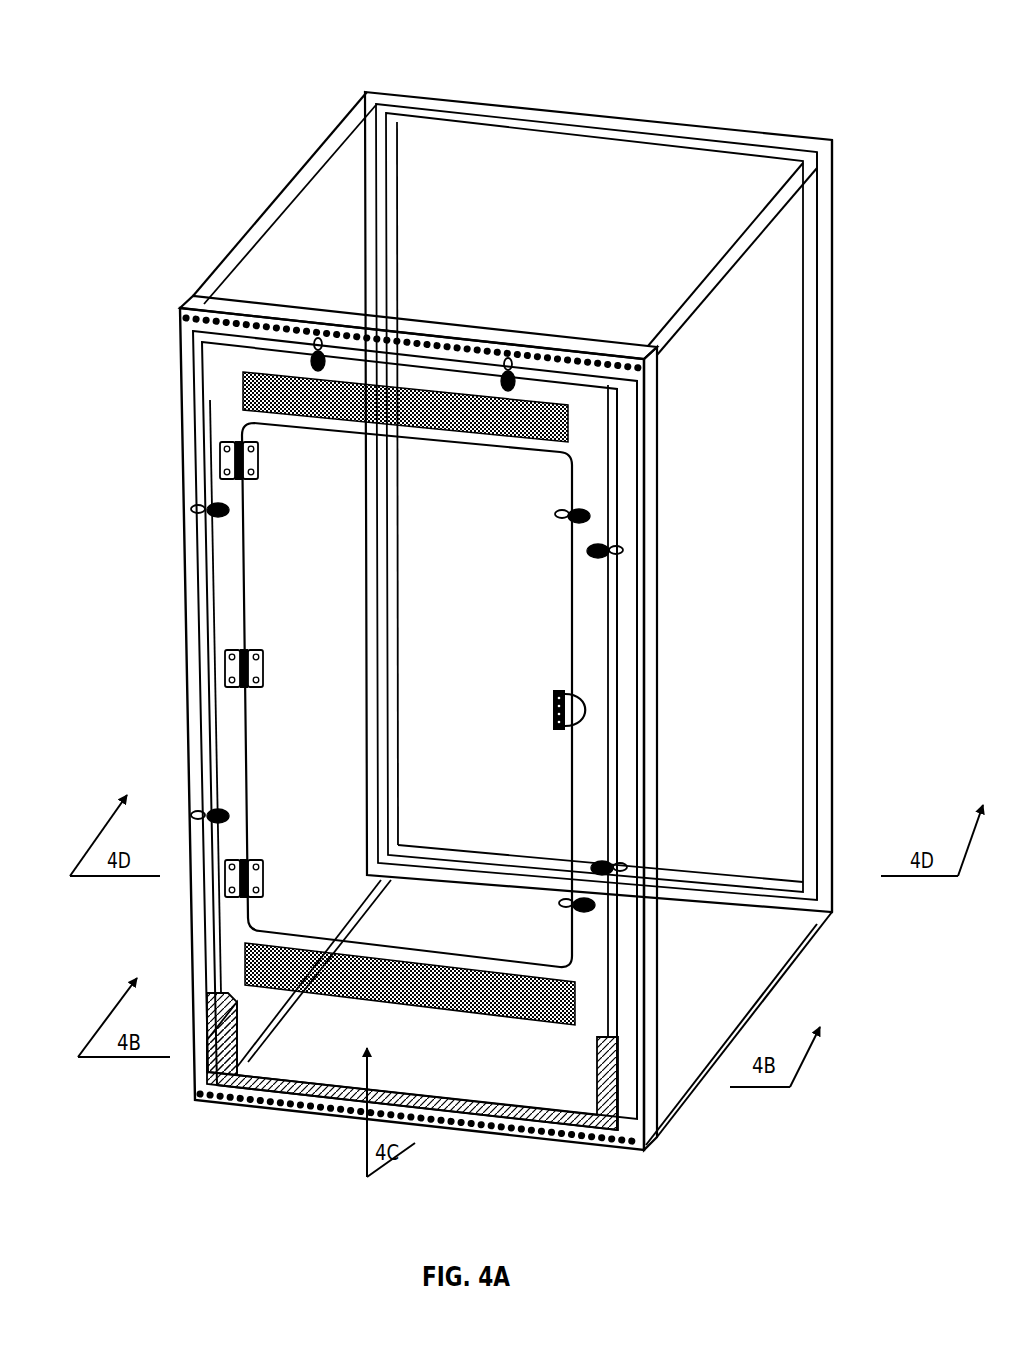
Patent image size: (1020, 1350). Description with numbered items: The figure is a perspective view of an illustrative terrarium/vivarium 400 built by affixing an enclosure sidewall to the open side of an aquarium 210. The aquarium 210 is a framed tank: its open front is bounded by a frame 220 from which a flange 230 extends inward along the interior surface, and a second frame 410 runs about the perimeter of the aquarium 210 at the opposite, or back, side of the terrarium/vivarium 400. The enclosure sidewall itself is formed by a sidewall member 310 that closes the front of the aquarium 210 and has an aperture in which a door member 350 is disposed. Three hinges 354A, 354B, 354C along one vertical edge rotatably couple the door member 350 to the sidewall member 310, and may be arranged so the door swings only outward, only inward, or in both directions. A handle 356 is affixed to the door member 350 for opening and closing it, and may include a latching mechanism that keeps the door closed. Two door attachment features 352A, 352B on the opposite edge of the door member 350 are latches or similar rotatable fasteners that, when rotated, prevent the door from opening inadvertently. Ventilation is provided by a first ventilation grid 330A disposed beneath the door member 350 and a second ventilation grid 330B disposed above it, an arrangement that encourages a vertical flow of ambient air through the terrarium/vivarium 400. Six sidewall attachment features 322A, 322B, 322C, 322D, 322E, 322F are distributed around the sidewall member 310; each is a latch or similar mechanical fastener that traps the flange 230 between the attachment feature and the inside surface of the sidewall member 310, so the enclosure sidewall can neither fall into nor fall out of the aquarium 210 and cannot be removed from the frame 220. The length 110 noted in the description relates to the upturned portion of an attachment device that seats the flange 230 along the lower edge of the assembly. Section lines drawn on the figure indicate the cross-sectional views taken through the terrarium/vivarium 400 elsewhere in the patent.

The terrarium/vivarium 400 is at (893, 39).
The frame 410 is at (842, 866).
The aquarium 210 is at (769, 993).
The frame 220 is at (650, 1150).
The flange 230 is at (210, 970).
The length 110 is at (563, 1136).
The sidewall member 310 is at (412, 1066).
The door member 350 is at (407, 695).
The first ventilation grid 330A is at (258, 990).
The second ventilation grid 330B is at (425, 392).
The hinge 354A is at (265, 883).
The hinge 354B is at (265, 668).
The hinge 354C is at (262, 460).
The handle 356 is at (552, 709).
The sidewall attachment feature 322A is at (232, 816).
The sidewall attachment feature 322B is at (232, 510).
The sidewall attachment feature 322C is at (318, 337).
The sidewall attachment feature 322D is at (508, 357).
The sidewall attachment feature 322E is at (624, 551).
The sidewall attachment feature 322F is at (628, 866).
The door attachment feature 352A is at (555, 513).
The door attachment feature 352B is at (558, 904).